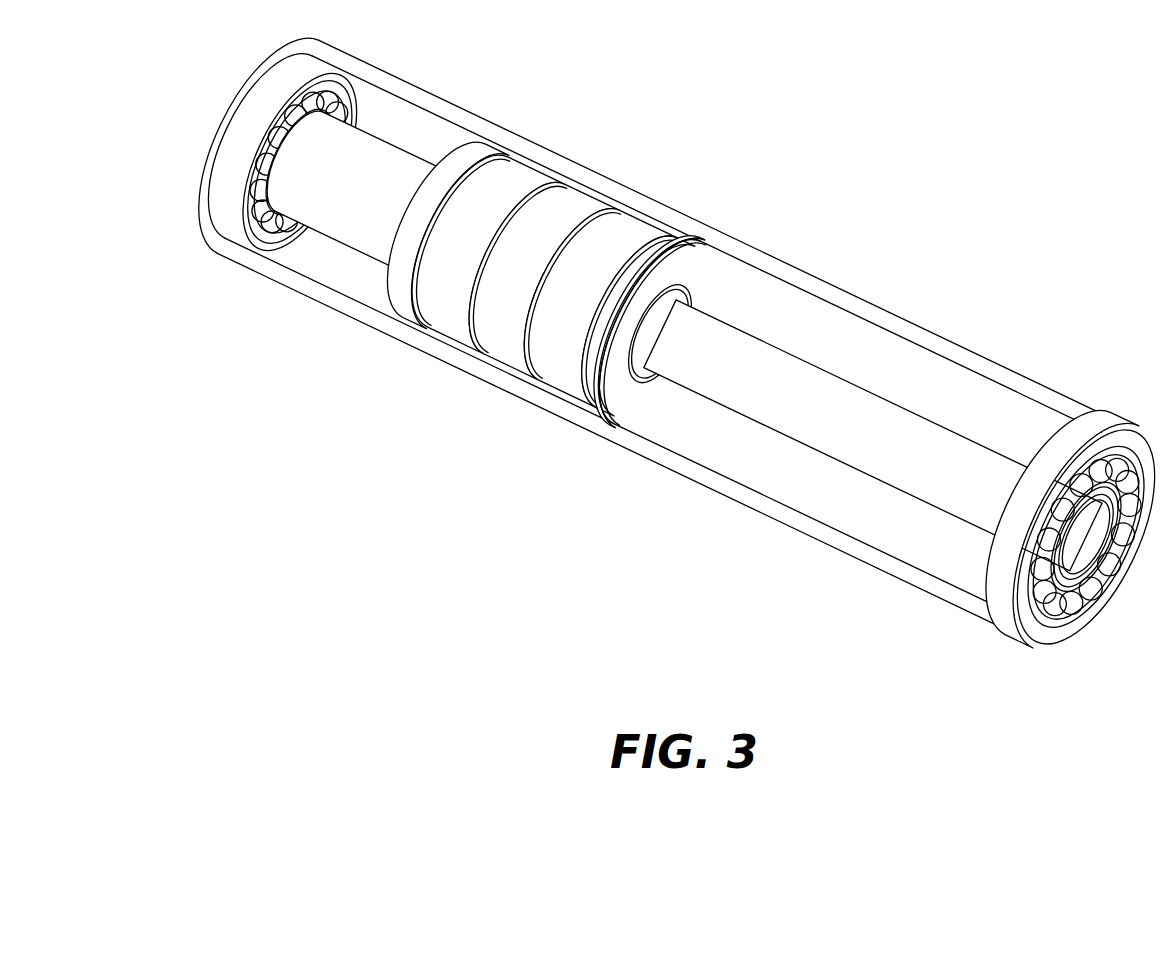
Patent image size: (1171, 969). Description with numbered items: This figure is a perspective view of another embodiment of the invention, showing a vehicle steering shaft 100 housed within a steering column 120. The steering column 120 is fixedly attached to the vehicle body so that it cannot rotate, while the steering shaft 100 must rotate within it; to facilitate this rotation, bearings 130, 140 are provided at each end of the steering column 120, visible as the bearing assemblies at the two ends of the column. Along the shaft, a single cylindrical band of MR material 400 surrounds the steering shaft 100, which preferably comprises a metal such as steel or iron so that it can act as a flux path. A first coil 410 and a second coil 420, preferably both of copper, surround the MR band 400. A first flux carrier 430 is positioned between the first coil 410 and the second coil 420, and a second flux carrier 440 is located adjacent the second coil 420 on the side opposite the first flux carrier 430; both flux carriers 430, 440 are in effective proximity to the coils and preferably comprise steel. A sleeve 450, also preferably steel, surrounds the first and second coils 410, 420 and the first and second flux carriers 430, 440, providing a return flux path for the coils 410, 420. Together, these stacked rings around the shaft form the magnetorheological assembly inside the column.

The steering shaft 100 is at (826, 437).
The steering column 120 is at (810, 283).
The bearing 130 is at (1004, 598).
The bearing 140 is at (227, 202).
The cylindrical band of MR material 400 is at (576, 242).
The first coil 410 is at (565, 192).
The second coil 420 is at (653, 238).
The first flux carrier 430 is at (618, 230).
The second flux carrier 440 is at (700, 262).
The sleeve 450 is at (522, 172).